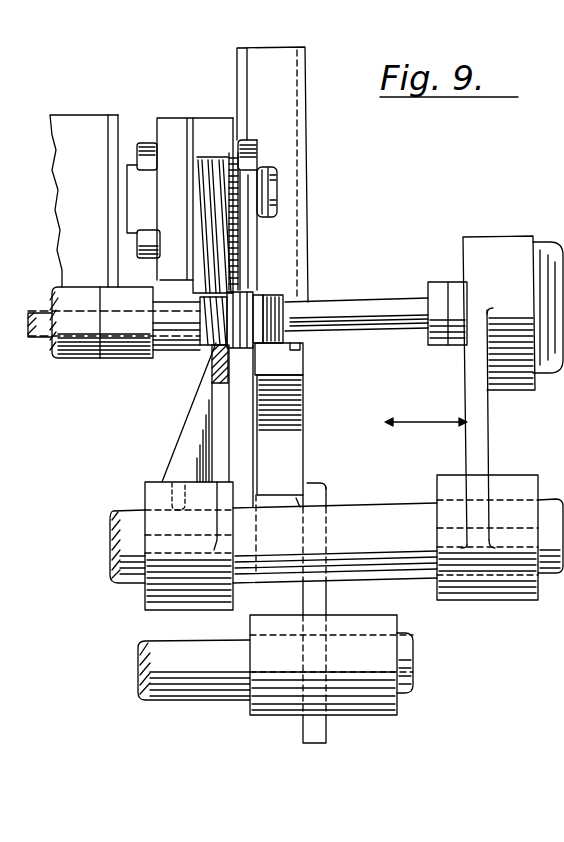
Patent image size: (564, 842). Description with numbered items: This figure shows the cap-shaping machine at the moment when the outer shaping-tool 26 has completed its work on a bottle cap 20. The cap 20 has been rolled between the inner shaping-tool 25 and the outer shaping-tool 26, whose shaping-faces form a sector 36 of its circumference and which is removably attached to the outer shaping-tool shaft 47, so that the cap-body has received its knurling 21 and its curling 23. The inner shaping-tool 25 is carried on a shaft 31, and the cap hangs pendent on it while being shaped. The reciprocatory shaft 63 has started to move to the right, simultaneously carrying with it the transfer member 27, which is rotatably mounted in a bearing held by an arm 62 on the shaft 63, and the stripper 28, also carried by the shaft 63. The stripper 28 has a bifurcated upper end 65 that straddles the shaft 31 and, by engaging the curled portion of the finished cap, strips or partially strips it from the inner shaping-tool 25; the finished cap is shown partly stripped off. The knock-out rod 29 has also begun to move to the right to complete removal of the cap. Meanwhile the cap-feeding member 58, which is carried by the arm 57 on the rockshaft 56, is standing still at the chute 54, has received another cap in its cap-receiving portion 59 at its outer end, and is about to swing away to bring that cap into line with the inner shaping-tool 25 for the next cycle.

The bottle cap 20 is at (262, 296).
The knurling 21 is at (284, 293).
The curling 23 is at (236, 300).
The inner shaping-tool 25 is at (207, 342).
The outer shaping-tool 26 is at (215, 122).
The transfer member 27 is at (386, 301).
The stripper 28 is at (225, 424).
The knock-out rod 29 is at (38, 316).
The shaft 31 is at (80, 343).
The sector 36 is at (240, 166).
The outer shaping-tool shaft 47 is at (276, 194).
The chute 54 is at (292, 61).
The rockshaft 56 is at (181, 697).
The arm 57 is at (326, 742).
The cap-feeding member 58 is at (305, 401).
The cap-receiving portion 59 is at (292, 346).
The arm 62 is at (490, 432).
The reciprocatory shaft 63 is at (383, 511).
The bifurcated upper end 65 is at (230, 357).